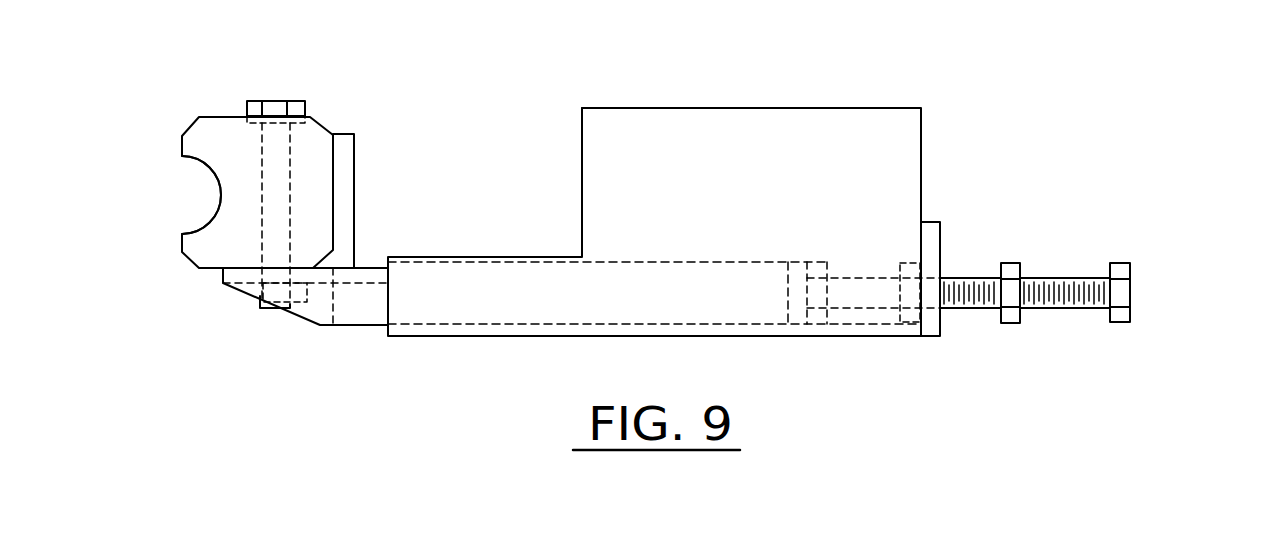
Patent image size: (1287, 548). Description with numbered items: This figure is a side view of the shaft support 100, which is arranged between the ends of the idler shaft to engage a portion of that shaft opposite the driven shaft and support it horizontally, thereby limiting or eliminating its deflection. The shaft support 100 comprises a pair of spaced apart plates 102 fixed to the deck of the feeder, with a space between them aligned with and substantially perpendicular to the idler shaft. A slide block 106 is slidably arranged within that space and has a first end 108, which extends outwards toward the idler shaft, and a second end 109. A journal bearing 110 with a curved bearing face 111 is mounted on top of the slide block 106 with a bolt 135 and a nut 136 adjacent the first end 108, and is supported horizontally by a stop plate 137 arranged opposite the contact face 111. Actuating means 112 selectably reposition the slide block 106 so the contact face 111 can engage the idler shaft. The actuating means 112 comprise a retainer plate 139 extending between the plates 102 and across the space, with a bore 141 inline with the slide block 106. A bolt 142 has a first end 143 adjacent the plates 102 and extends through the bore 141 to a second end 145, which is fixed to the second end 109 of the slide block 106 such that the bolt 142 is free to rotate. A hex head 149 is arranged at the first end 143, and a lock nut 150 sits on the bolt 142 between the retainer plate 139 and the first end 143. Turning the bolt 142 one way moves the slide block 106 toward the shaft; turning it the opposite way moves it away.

The shaft support 100 is at (778, 86).
The plates 102 is at (903, 157).
The slide block 106 is at (368, 307).
The first end 108 is at (283, 307).
The second end 109 is at (817, 272).
The journal bearing 110 is at (323, 130).
The curved bearing face 111 is at (212, 227).
The actuating means 112 is at (1046, 312).
The bolt 135 is at (277, 108).
The nut 136 is at (248, 298).
The stop plate 137 is at (345, 188).
The retainer plate 139 is at (935, 232).
The bore 141 is at (940, 280).
The bolt 142 is at (1072, 278).
The first end 143 is at (1095, 310).
The second end 145 is at (835, 288).
The hex head 149 is at (1118, 267).
The lock nut 150 is at (1015, 312).